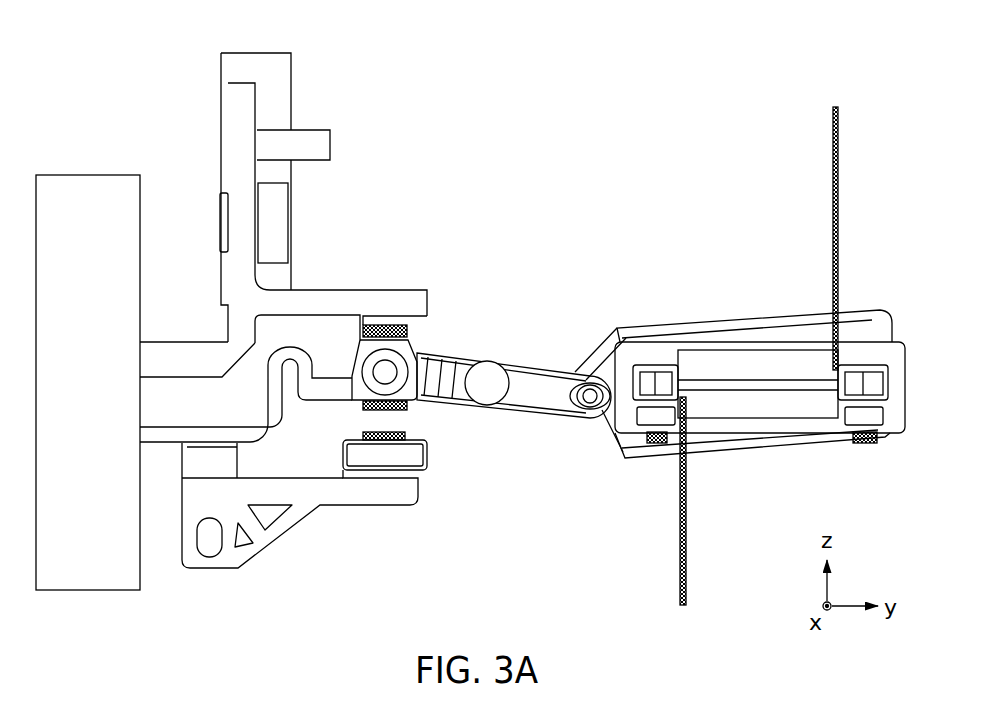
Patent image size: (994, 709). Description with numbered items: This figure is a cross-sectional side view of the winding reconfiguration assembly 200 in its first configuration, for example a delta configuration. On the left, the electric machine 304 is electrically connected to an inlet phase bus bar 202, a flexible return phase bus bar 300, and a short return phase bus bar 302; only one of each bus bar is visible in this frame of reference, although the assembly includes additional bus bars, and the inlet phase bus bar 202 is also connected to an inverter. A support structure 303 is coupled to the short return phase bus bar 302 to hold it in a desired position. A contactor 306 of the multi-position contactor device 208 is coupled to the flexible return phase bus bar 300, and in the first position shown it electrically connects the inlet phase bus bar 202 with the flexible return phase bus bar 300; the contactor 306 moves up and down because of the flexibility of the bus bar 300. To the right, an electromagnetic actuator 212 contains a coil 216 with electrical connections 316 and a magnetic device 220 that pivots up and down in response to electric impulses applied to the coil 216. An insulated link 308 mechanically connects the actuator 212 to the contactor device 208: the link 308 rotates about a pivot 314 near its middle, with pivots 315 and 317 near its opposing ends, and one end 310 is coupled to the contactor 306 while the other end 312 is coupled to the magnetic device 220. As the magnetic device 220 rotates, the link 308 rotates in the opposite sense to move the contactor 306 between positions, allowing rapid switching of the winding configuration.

The winding reconfiguration assembly 200 is at (853, 91).
The inlet phase bus bar 202 is at (345, 131).
The multi-position contactor device 208 is at (450, 303).
The electromagnetic actuator 212 is at (777, 302).
The coil 216 is at (753, 423).
The magnetic device 220 is at (716, 332).
The flexible return phase bus bar 300 is at (262, 432).
The short return phase bus bar 302 is at (417, 457).
The support structure 303 is at (280, 523).
The electric machine 304 is at (82, 188).
The contactor 306 is at (345, 351).
The link 308 is at (535, 352).
The end of link 310 is at (425, 342).
The other end of link 312 is at (596, 428).
The pivot 314 is at (480, 404).
The pivot 315 is at (391, 375).
The electrical connections 316 is at (679, 498).
The pivot 317 is at (592, 393).